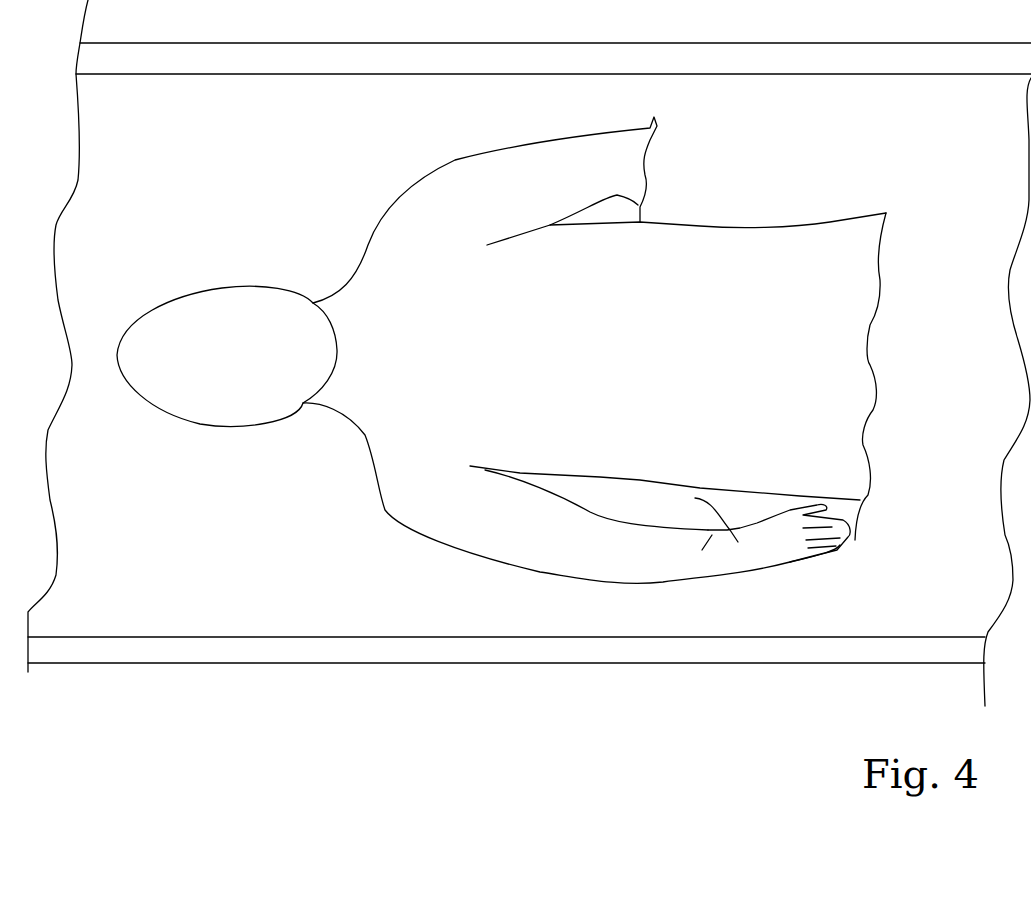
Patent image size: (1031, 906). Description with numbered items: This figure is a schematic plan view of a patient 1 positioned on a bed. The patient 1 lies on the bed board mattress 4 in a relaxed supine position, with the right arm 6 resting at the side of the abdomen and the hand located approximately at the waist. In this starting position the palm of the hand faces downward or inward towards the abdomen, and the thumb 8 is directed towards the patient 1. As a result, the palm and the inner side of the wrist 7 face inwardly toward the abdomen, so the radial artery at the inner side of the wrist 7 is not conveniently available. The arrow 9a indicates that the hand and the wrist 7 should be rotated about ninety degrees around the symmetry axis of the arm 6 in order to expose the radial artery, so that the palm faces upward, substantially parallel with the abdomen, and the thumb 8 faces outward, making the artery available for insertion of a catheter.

The patient 1 is at (330, 466).
The bed board mattress 4 is at (289, 605).
The right arm 6 is at (617, 553).
The wrist 7 is at (758, 557).
The thumb 8 is at (812, 555).
The arrow 9a is at (697, 521).